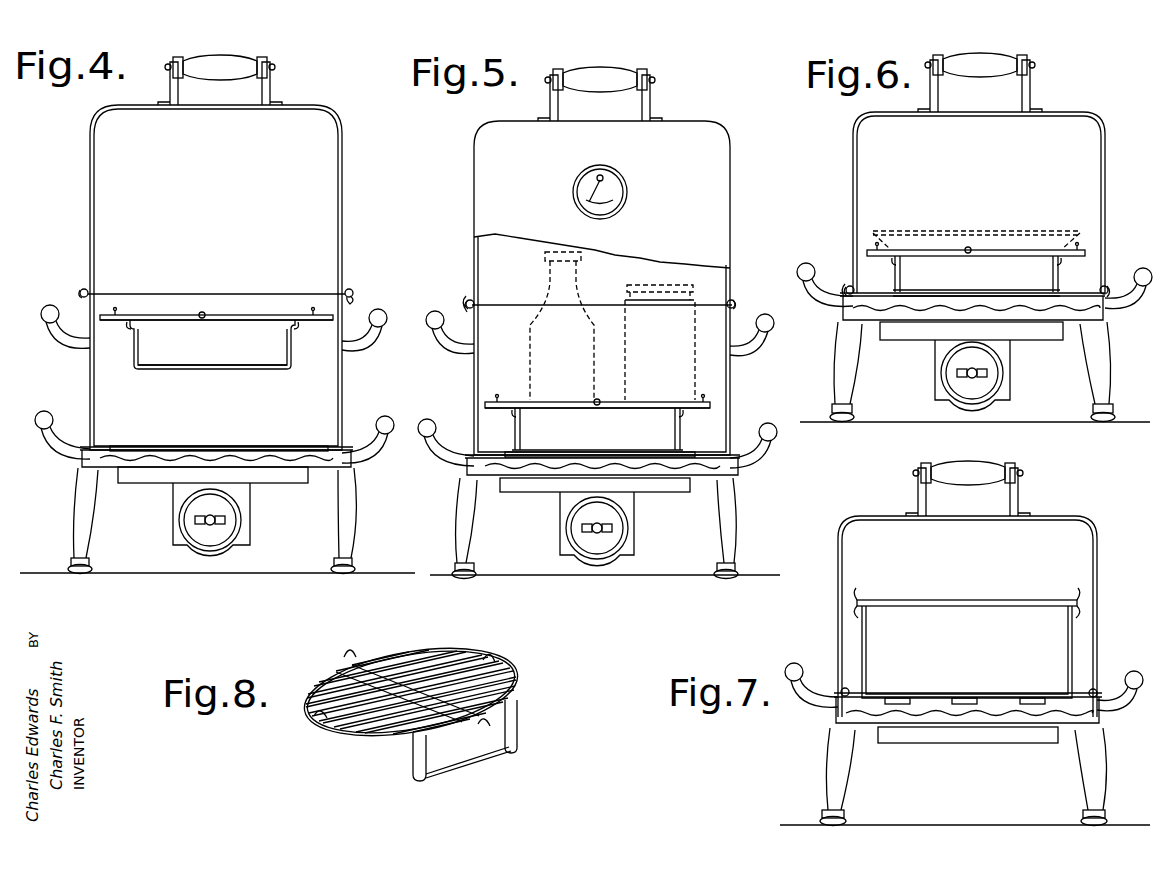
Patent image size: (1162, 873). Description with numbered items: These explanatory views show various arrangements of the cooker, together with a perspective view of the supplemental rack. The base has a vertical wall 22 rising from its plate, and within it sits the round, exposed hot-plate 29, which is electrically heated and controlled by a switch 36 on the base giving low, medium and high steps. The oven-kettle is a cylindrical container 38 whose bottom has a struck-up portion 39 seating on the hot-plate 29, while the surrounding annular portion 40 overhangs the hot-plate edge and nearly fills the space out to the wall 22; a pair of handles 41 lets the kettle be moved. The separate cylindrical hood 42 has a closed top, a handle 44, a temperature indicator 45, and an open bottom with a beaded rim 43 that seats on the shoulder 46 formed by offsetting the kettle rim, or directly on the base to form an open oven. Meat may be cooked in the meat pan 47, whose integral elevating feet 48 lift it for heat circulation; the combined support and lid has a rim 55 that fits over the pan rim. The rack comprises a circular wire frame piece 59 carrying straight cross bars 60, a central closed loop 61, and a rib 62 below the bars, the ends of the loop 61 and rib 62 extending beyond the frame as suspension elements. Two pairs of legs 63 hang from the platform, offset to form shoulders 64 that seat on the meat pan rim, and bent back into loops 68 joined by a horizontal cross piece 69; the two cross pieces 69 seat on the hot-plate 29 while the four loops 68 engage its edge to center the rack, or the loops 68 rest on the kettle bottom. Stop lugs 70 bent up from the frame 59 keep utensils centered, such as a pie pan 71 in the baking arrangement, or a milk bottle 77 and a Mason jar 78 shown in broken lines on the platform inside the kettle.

In FIG. 4, the vertical wall 22 is at (92, 470).
In FIG. 5, the vertical wall 22 is at (742, 474).
In FIG. 6, the vertical wall 22 is at (853, 297).
In FIG. 7, the vertical wall 22 is at (845, 701).
In FIG. 4, the hot-plate 29 is at (231, 456).
In FIG. 5, the hot-plate 29 is at (629, 462).
In FIG. 6, the hot-plate 29 is at (991, 307).
In FIG. 7, the hot-plate 29 is at (923, 708).
In FIG. 4, the switch 36 is at (251, 518).
In FIG. 5, the switch 36 is at (636, 521).
In FIG. 6, the switch 36 is at (1011, 373).
In FIG. 4, the cylindrical container 38 is at (340, 395).
In FIG. 5, the cylindrical container 38 is at (729, 400).
In FIG. 4, the struck-up bottom portion 39 is at (166, 447).
In FIG. 5, the struck-up bottom portion 39 is at (541, 458).
In FIG. 4, the annular bottom portion 40 is at (352, 492).
In FIG. 5, the annular bottom portion 40 is at (490, 461).
In FIG. 4, the handles 41 is at (63, 338).
In FIG. 5, the handles 41 is at (446, 340).
In FIG. 4, the cylindrical hood 42 is at (99, 204).
In FIG. 5, the cylindrical hood 42 is at (485, 190).
In FIG. 6, the cylindrical hood 42 is at (853, 185).
In FIG. 7, the cylindrical hood 42 is at (838, 565).
In FIG. 4, the beaded rim 43 is at (336, 295).
In FIG. 5, the beaded rim 43 is at (734, 299).
In FIG. 6, the beaded rim 43 is at (852, 288).
In FIG. 4, the handle 44 is at (217, 63).
In FIG. 5, the handle 44 is at (599, 78).
In FIG. 6, the handle 44 is at (984, 70).
In FIG. 7, the handle 44 is at (962, 470).
In FIG. 5, the temperature indicator 45 is at (620, 198).
In FIG. 4, the shoulder 46 is at (355, 296).
In FIG. 5, the shoulder 46 is at (466, 306).
In FIG. 7, the meat pan 47 is at (878, 640).
In FIG. 7, the elevating feet 48 is at (1028, 704).
In FIG. 7, the rim 55 is at (946, 602).
In FIG. 5, the circular wire frame piece 59 is at (579, 409).
In FIG. 8, the circular wire frame piece 59 is at (513, 681).
In FIG. 8, the cross bars 60 is at (388, 722).
In FIG. 4, the closed loop 61 is at (246, 316).
In FIG. 5, the closed loop 61 is at (651, 402).
In FIG. 8, the closed loop 61 is at (431, 672).
In FIG. 8, the rib 62 is at (447, 722).
In FIG. 5, the legs 63 is at (514, 433).
In FIG. 6, the legs 63 is at (903, 279).
In FIG. 8, the legs 63 is at (420, 781).
In FIG. 4, the shoulders 64 is at (141, 343).
In FIG. 8, the shoulders 64 is at (411, 748).
In FIG. 8, the loops 68 is at (518, 752).
In FIG. 4, the horizontal cross piece 69 is at (199, 366).
In FIG. 8, the horizontal cross piece 69 is at (482, 752).
In FIG. 4, the stop lugs 70 is at (203, 313).
In FIG. 5, the stop lugs 70 is at (599, 400).
In FIG. 6, the stop lugs 70 is at (969, 249).
In FIG. 8, the stop lugs 70 is at (350, 650).
In FIG. 6, the pie pan 71 is at (1015, 232).
In FIG. 5, the milk bottle 77 is at (527, 358).
In FIG. 5, the Mason jar 78 is at (628, 358).